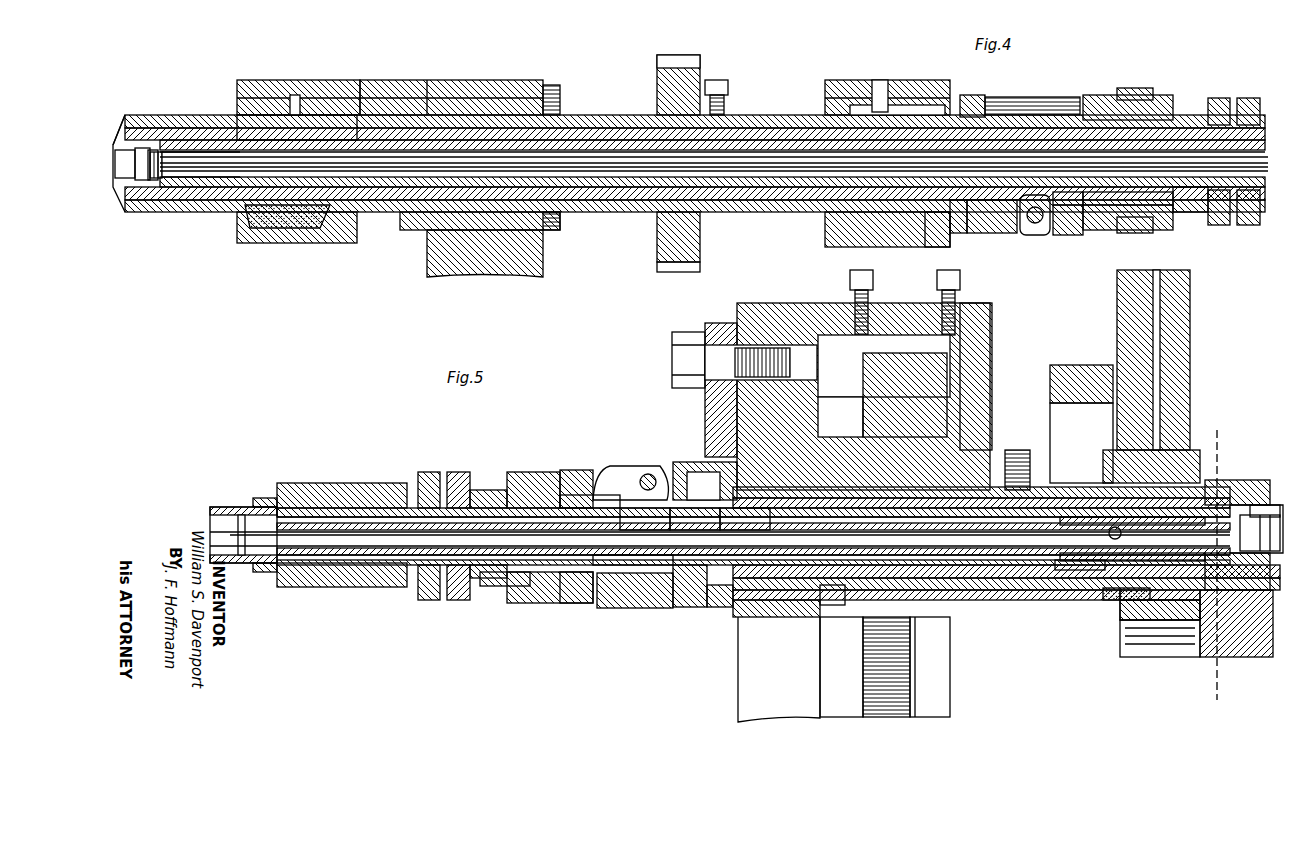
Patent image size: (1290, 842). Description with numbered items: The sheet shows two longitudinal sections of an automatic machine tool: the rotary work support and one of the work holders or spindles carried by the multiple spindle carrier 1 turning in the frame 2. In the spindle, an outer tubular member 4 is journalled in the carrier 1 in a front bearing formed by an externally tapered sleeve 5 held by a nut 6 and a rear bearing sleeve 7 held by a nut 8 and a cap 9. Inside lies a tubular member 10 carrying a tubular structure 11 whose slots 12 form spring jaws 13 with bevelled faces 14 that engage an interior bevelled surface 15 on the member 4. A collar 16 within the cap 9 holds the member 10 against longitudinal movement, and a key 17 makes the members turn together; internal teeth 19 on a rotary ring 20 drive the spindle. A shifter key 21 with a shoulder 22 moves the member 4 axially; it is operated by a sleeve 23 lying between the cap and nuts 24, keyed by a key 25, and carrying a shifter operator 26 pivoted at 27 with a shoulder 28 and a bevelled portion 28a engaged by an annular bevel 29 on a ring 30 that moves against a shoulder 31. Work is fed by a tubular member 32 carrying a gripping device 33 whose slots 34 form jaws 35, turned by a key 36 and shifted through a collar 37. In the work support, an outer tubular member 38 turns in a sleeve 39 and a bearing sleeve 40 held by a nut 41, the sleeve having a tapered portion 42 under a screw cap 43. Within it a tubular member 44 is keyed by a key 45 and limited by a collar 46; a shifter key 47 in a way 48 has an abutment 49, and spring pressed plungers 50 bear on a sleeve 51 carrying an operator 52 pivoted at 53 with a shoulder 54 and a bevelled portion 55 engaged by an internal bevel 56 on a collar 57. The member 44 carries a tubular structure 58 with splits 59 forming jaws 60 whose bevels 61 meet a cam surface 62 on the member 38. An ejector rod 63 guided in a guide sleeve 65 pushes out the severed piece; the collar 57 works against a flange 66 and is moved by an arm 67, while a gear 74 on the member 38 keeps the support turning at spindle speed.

In FIG. 5, the rotary multiple spindle carrier 1 is at (750, 618).
In FIG. 4, the frame 2 is at (840, 82).
In FIG. 5, the frame 2 is at (985, 380).
In FIG. 5, the outer tubular member 4 is at (1040, 598).
In FIG. 5, the externally tapered sleeve 5 is at (1200, 455).
In FIG. 5, the nut 6 is at (1108, 470).
In FIG. 5, the bearing sleeve 7 is at (730, 470).
In FIG. 5, the nut 8 is at (832, 605).
In FIG. 4, the cap 9 is at (153, 150).
In FIG. 5, the cap 9 is at (712, 605).
In FIG. 4, the tubular member 10 is at (190, 152).
In FIG. 5, the tubular member 10 is at (545, 532).
In FIG. 5, the tubular structure 11 is at (1075, 575).
In FIG. 5, the slits or slots 12 is at (1158, 620).
In FIG. 5, the spring jaws 13 is at (1190, 620).
In FIG. 5, the bevelled outer faces 14 is at (1238, 600).
In FIG. 5, the interior annular bevelled surface 15 is at (1262, 505).
In FIG. 5, the collar 16 is at (680, 605).
In FIG. 5, the key 17 is at (810, 505).
In FIG. 5, the internal teeth 19 is at (855, 437).
In FIG. 5, the rotary ring 20 is at (900, 365).
In FIG. 5, the shifter key 21 is at (690, 505).
In FIG. 5, the shoulder 22 is at (735, 505).
In FIG. 5, the sleeve 23 is at (635, 607).
In FIG. 5, the nuts 24 is at (458, 472).
In FIG. 5, the key 25 is at (500, 582).
In FIG. 5, the shifter operator 26 is at (615, 472).
In FIG. 5, the pivot 27 is at (650, 474).
In FIG. 5, the shoulder 28 is at (640, 500).
In FIG. 5, the bevelled portion 28a is at (570, 500).
In FIG. 5, the annular bevelled portion 29 is at (590, 472).
In FIG. 5, the ring 30 is at (585, 602).
In FIG. 5, the shoulder 31 is at (605, 608).
In FIG. 5, the tubular member 32 is at (942, 520).
In FIG. 5, the tubular gripping device 33 is at (1115, 600).
In FIG. 5, the longitudinally extending slots 34 is at (1110, 534).
In FIG. 5, the jaws 35 is at (1240, 492).
In FIG. 5, the key 36 is at (600, 560).
In FIG. 5, the collar 37 is at (335, 585).
In FIG. 4, the outer tubular member 38 is at (628, 208).
In FIG. 4, the sleeve 39 is at (912, 95).
In FIG. 4, the bearing sleeve 40 is at (455, 100).
In FIG. 4, the nut 41 is at (542, 240).
In FIG. 4, the tapered portion 42 is at (262, 92).
In FIG. 4, the screw cap 43 is at (318, 242).
In FIG. 4, the tubular member 44 is at (585, 130).
In FIG. 4, the key 45 is at (893, 108).
In FIG. 4, the collar 46 is at (995, 232).
In FIG. 4, the shifter key 47 is at (960, 232).
In FIG. 4, the way 48 is at (925, 205).
In FIG. 5, the way 48 is at (1015, 450).
In FIG. 4, the shoulder or abutment 49 is at (942, 212).
In FIG. 4, the spring pressed plungers 50 is at (1050, 100).
In FIG. 4, the sleeve 51 is at (1090, 100).
In FIG. 4, the operator 52 is at (1078, 232).
In FIG. 4, the pivot 53 is at (1038, 226).
In FIG. 4, the shoulder 54 is at (1045, 236).
In FIG. 4, the bevelled portion 55 is at (1125, 206).
In FIG. 4, the internal annular bevel 56 is at (1088, 224).
In FIG. 4, the collar 57 is at (1160, 92).
In FIG. 4, the tubular structure 58 is at (240, 118).
In FIG. 4, the longitudinal splits 59 is at (118, 175).
In FIG. 4, the resilient jaws 60 is at (125, 180).
In FIG. 4, the cams or bevels 61 is at (125, 120).
In FIG. 4, the internal annular bevelled surface 62 is at (148, 180).
In FIG. 4, the rod 63 is at (770, 162).
In FIG. 4, the guide sleeve 65 is at (285, 225).
In FIG. 4, the enlargement or flange 66 is at (1222, 100).
In FIG. 4, the arm 67 is at (1148, 233).
In FIG. 4, the gear 74 is at (695, 272).